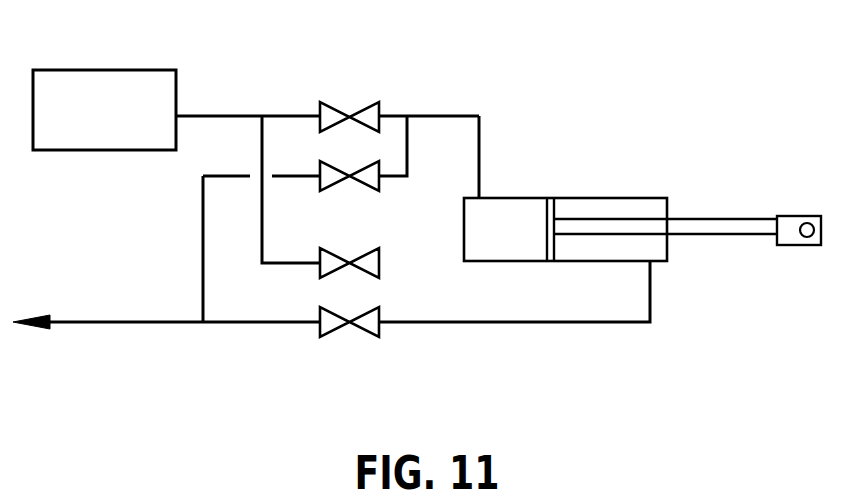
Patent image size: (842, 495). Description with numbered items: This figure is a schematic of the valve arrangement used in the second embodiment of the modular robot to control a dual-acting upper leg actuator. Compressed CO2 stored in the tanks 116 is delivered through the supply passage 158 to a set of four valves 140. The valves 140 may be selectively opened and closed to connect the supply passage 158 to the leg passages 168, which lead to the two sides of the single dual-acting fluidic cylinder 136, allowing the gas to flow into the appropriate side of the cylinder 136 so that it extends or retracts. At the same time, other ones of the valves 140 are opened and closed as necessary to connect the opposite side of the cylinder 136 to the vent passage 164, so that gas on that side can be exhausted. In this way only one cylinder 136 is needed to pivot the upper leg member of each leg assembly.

The tanks 116 is at (117, 70).
The supply passage 158 is at (215, 115).
The valves 140 is at (380, 172).
The leg passages 168 is at (462, 123).
The dual-acting cylinder 136 is at (595, 198).
The vent passage 164 is at (105, 322).